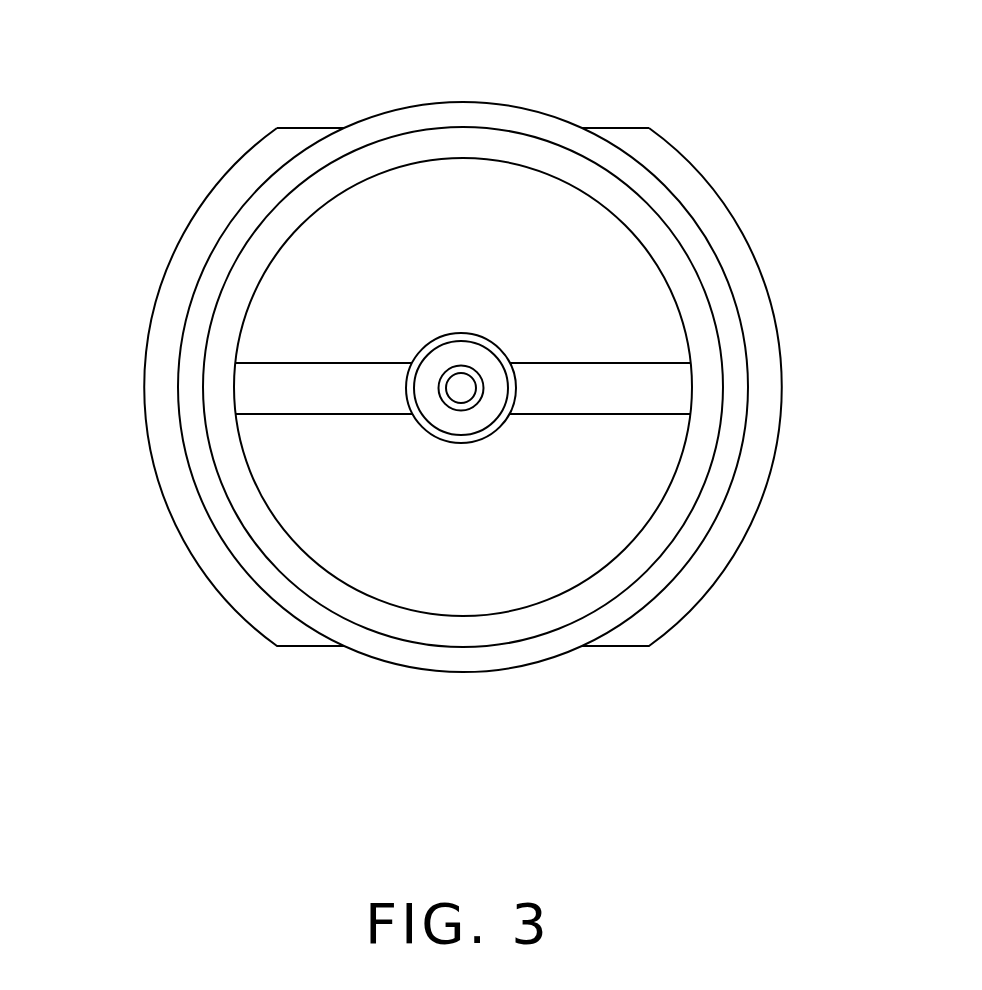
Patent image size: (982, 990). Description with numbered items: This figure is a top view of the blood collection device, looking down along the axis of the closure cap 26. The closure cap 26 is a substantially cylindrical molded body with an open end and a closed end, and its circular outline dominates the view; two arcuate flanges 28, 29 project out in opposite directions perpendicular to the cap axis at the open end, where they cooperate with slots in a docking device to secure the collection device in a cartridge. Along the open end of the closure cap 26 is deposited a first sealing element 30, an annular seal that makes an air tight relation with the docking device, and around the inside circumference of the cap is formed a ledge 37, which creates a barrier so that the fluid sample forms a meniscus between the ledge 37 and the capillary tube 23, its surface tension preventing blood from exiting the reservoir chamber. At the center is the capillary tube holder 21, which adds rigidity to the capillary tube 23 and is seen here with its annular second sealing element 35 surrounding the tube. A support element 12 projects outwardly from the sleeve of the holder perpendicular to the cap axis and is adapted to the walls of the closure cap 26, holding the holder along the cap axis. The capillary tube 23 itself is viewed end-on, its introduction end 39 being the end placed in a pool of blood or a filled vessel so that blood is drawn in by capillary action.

The support element 12 is at (368, 390).
The capillary tube holder 21 is at (483, 363).
The capillary tube 23 is at (455, 408).
The closure cap 26 is at (433, 572).
The arcuate flange 28 is at (158, 403).
The arcuate flange 29 is at (763, 412).
The first sealing element 30 is at (543, 130).
The second sealing element 35 is at (495, 432).
The ledge 37 is at (378, 160).
The introduction end 39 is at (455, 386).